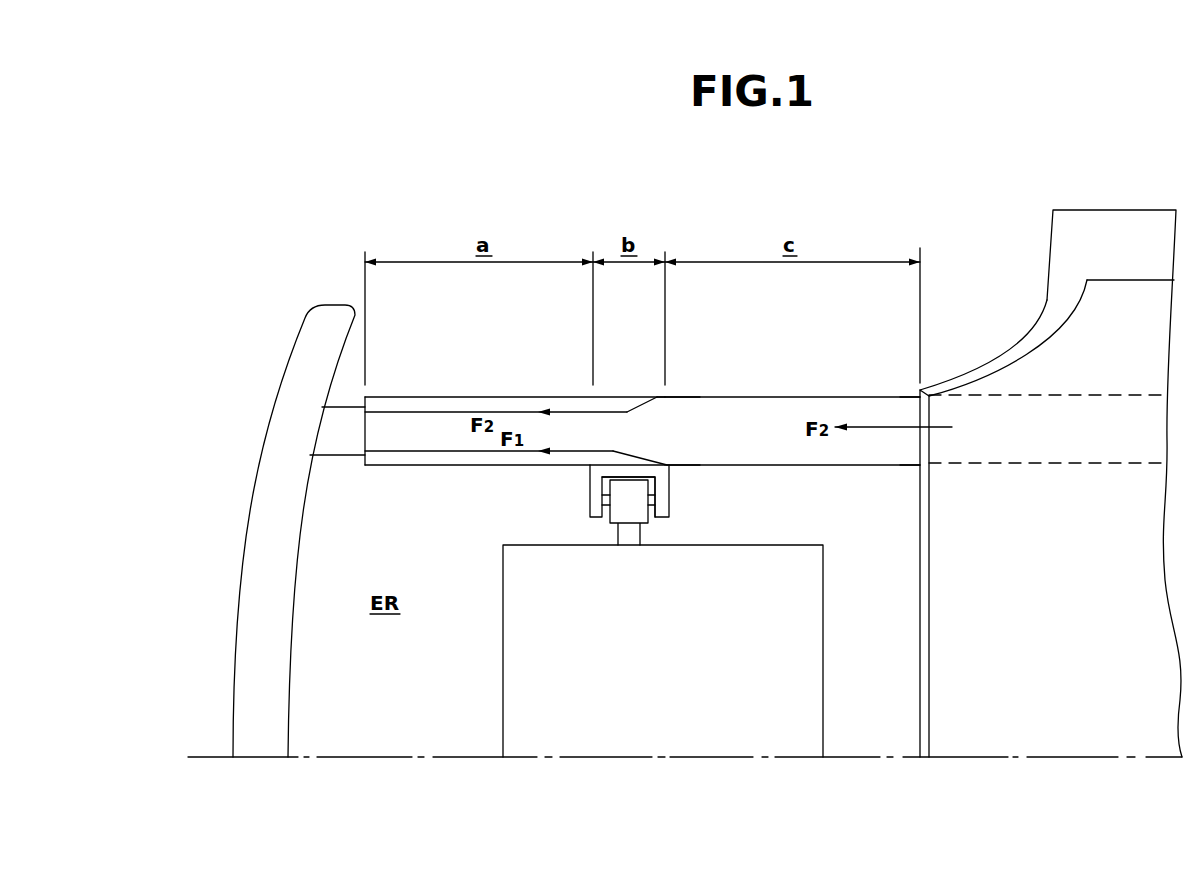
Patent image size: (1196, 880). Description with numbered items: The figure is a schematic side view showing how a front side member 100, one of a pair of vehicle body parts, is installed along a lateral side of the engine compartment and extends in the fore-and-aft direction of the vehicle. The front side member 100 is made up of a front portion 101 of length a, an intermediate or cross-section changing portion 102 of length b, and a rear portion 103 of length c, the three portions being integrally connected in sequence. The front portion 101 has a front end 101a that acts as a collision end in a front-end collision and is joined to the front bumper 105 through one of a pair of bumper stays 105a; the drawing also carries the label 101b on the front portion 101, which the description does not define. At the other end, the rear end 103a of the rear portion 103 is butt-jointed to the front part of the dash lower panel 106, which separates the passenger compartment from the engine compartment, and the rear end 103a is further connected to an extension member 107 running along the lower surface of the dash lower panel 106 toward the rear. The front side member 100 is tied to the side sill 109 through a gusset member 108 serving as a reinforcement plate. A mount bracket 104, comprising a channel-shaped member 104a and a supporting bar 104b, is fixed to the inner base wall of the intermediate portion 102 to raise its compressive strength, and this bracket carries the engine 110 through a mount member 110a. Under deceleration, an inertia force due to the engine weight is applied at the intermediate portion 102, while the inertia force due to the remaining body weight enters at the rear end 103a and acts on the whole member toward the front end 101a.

The front side member 100 is at (712, 390).
The front portion 101 is at (515, 397).
The front end 101a is at (366, 467).
The outer tube of shaft 101b is at (420, 397).
The intermediate portion 102 is at (627, 397).
The rear portion 103 is at (812, 397).
The rear end 103a is at (920, 480).
The mount bracket 104 is at (590, 500).
The channel-shaped member 104a is at (665, 490).
The supporting bar 104b is at (657, 503).
The front bumper 105 is at (252, 490).
The bumper stay 105a is at (348, 418).
The dash lower panel 106 is at (920, 582).
The extension member 107 is at (1073, 463).
The gusset member 108 is at (1043, 317).
The side sill 109 is at (1122, 222).
The engine 110 is at (503, 680).
The mount member 110a is at (648, 520).